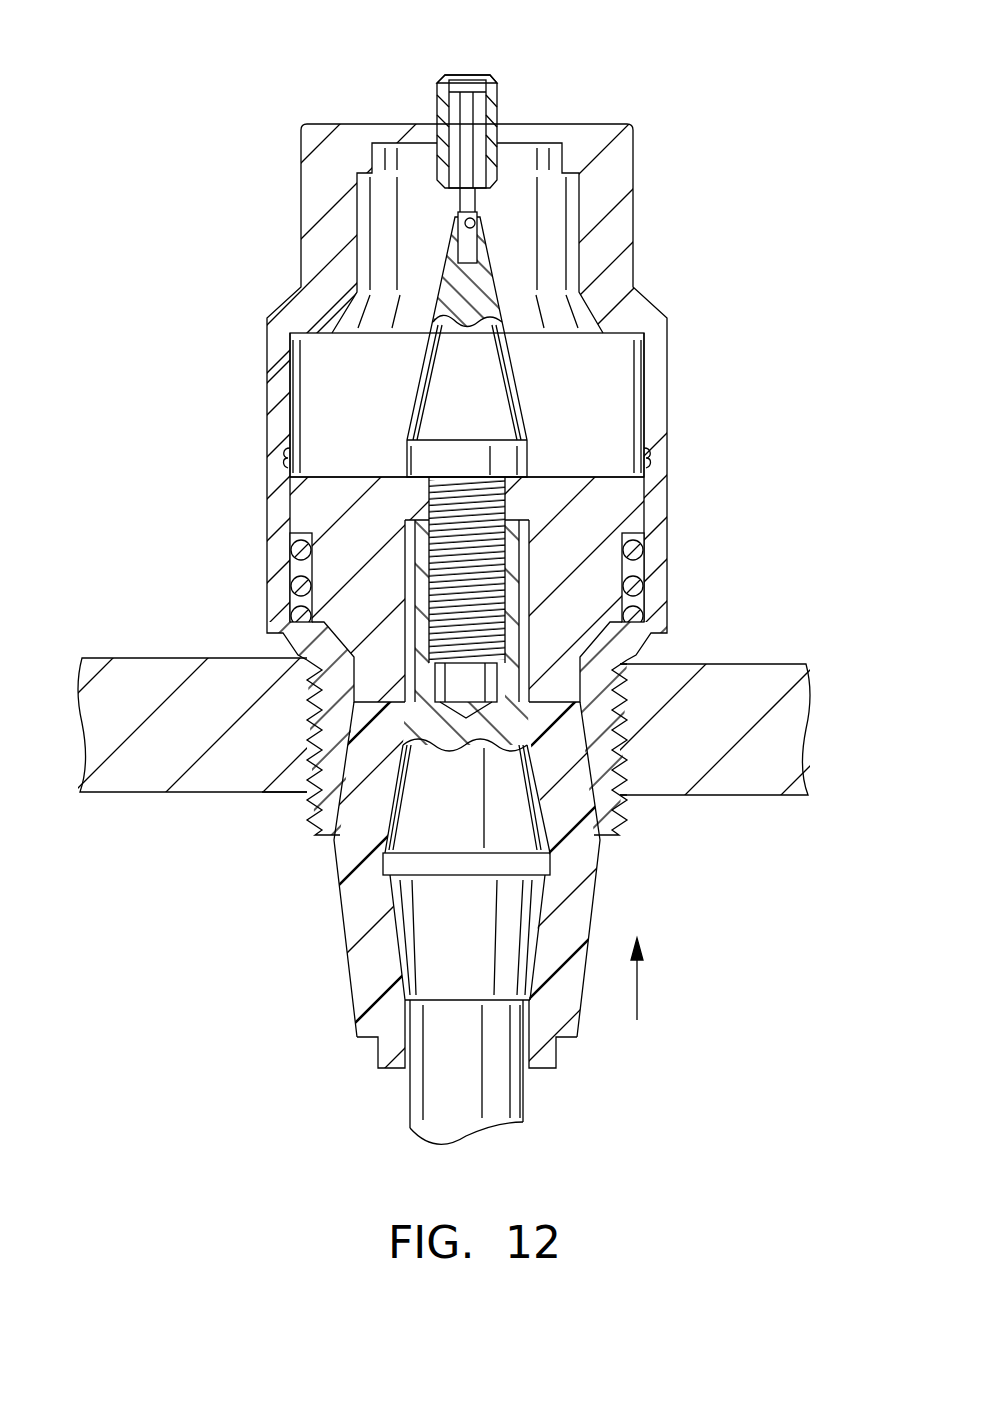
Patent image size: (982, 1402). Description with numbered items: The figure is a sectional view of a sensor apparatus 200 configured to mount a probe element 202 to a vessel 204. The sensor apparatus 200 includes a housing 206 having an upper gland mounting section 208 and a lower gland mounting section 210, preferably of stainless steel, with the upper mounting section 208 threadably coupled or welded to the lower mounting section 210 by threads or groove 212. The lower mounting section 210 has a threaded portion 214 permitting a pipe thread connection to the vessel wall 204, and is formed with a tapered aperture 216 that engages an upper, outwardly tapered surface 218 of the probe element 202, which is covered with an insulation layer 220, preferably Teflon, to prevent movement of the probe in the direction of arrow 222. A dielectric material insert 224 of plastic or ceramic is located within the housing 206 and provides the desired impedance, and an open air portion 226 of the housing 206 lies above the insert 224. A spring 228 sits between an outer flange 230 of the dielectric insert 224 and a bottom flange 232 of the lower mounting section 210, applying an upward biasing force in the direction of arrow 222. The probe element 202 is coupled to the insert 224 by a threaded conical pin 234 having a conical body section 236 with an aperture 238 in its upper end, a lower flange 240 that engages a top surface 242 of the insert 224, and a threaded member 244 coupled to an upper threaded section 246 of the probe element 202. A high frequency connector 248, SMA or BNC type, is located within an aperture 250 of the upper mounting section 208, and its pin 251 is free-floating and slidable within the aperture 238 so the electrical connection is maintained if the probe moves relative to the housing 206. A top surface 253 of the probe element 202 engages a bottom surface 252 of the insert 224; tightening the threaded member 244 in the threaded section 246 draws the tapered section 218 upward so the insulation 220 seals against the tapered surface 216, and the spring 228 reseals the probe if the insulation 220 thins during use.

The sensor apparatus 200 is at (746, 192).
The probe element 202 is at (445, 1098).
The vessel 204 is at (733, 693).
The housing 206 is at (714, 410).
The upper gland mounting section 208 is at (316, 208).
The lower gland mounting section 210 is at (268, 522).
The threads or groove 212 is at (288, 462).
The threaded portion 214 is at (318, 805).
The tapered aperture 216 is at (600, 800).
The outwardly tapered surface 218 is at (372, 890).
The insulation layer 220 is at (375, 973).
The arrow 222 is at (640, 1000).
The dielectric material insert 224 is at (612, 508).
The open air portion 226 is at (592, 396).
The spring 228 is at (640, 578).
The outer flange 230 is at (290, 556).
The bottom flange 232 is at (290, 610).
The threaded conical pin 234 is at (447, 391).
The conical body section 236 is at (497, 387).
The aperture 238 is at (478, 212).
The lower flange 240 is at (517, 500).
The top surface 242 is at (648, 470).
The threaded member 244 is at (428, 497).
The upper threaded section 246 is at (478, 640).
The high frequency connector 248 is at (505, 80).
The aperture 250 is at (498, 128).
The pin 251 is at (457, 198).
The bottom surface 252 is at (652, 665).
The top surface 253 is at (248, 787).